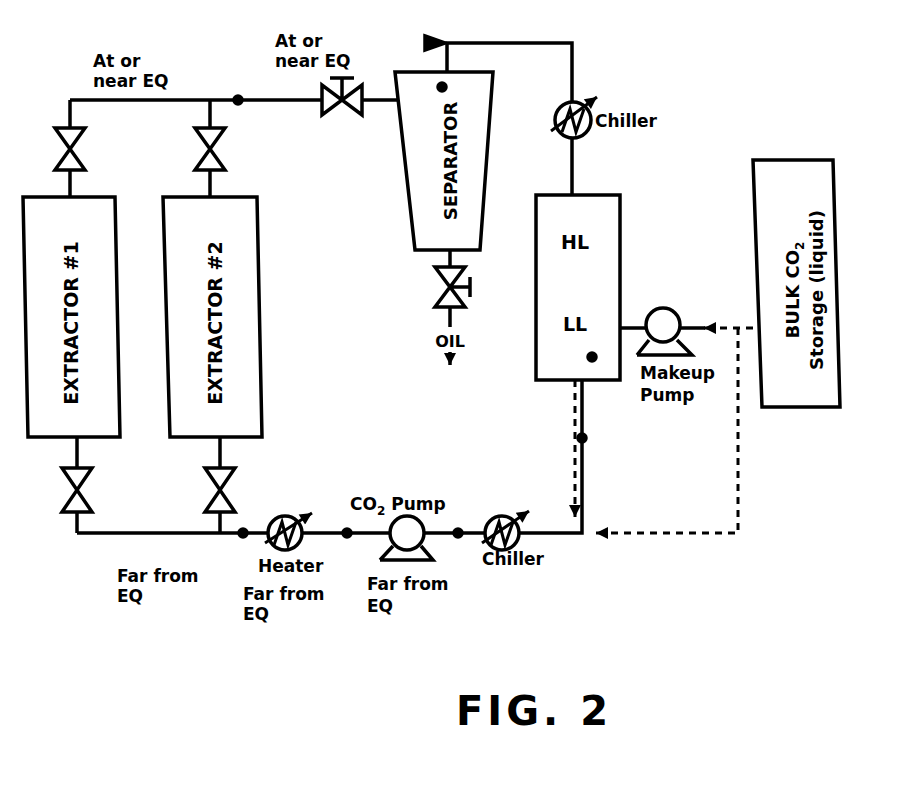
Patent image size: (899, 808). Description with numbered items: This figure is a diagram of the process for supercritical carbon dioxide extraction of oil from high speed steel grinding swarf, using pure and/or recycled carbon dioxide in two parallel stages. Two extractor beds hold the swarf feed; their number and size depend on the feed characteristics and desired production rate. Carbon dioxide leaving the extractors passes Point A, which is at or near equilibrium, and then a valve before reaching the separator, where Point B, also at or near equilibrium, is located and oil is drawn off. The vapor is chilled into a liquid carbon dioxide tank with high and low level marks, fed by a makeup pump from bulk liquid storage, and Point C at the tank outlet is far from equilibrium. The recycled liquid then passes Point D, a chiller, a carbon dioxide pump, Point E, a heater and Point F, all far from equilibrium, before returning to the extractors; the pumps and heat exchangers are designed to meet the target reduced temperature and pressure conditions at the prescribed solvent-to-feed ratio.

The Point A is at (230, 94).
The Point B is at (430, 80).
The Point C is at (600, 375).
The Point D is at (459, 548).
The Point E is at (347, 548).
The Point F is at (238, 546).